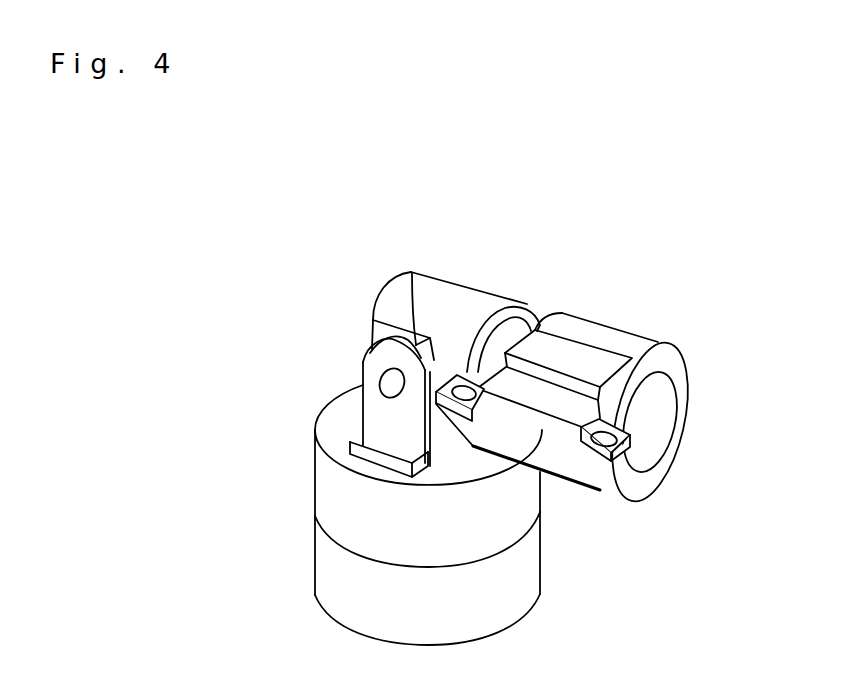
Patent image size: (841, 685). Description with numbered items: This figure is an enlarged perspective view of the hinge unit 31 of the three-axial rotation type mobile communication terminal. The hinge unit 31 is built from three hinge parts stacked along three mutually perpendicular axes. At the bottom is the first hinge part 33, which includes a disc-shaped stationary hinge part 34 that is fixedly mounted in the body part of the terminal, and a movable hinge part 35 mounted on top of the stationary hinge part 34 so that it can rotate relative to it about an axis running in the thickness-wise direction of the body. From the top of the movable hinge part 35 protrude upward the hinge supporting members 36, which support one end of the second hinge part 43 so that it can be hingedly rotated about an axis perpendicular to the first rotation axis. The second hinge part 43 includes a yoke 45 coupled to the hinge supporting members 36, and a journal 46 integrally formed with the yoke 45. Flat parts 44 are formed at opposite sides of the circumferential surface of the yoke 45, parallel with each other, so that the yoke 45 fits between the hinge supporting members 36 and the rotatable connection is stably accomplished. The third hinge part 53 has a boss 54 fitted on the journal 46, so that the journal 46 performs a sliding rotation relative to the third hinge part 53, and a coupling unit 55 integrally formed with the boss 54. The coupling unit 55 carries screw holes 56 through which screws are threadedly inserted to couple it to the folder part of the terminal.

The hinge unit 31 is at (279, 310).
The first hinge part 33 is at (147, 418).
The stationary hinge part 34 is at (327, 555).
The movable hinge part 35 is at (327, 485).
The hinge supporting members 36 is at (362, 362).
The second hinge part 43 is at (392, 272).
The flat parts 44 is at (467, 290).
The yoke 45 is at (490, 297).
The journal 46 is at (533, 307).
The third hinge part 53 is at (598, 180).
The boss 54 is at (659, 343).
The coupling unit 55 is at (576, 360).
The screw holes 56 is at (510, 403).